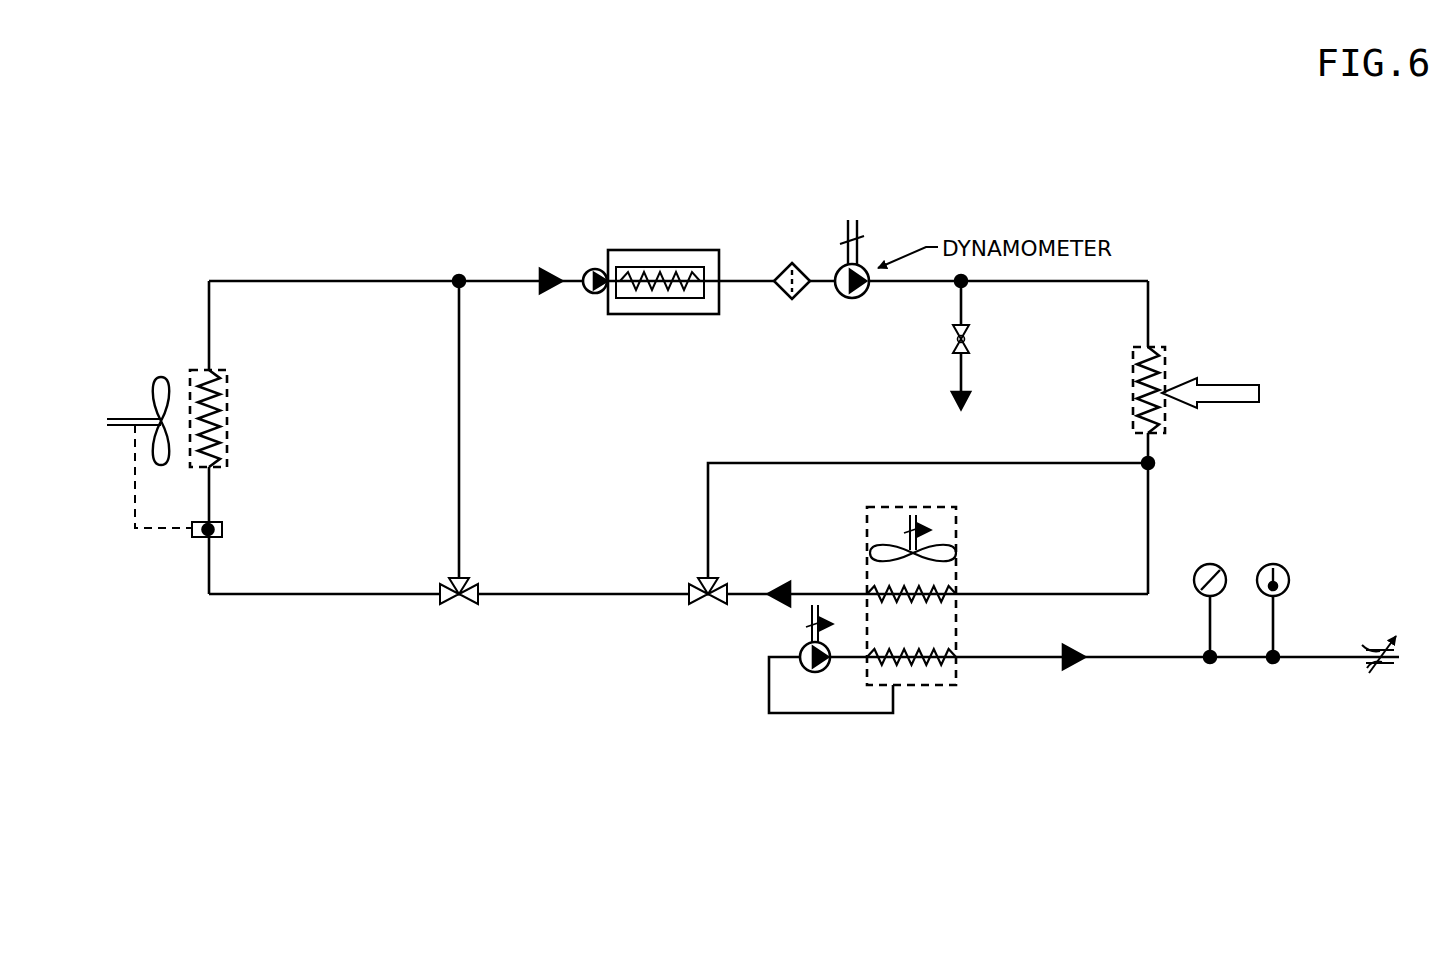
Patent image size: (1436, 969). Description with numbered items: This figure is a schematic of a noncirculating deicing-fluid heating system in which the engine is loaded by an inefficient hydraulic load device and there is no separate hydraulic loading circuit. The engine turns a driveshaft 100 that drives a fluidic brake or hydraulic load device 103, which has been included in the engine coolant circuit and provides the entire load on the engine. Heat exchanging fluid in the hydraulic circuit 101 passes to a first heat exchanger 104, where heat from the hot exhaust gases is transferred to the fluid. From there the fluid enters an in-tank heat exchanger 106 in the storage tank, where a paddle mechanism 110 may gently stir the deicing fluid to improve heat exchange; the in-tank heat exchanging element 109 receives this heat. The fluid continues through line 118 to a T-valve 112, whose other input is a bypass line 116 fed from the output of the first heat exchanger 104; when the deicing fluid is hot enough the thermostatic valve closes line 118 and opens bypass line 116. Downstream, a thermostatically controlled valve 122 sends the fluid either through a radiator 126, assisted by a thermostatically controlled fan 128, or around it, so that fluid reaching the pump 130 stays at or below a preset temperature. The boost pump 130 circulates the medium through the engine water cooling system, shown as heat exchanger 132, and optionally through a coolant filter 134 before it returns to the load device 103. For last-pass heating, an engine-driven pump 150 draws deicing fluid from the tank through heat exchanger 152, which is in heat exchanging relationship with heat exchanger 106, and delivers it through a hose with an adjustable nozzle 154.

The driveshaft 100 is at (875, 236).
The hydraulic circuit 101 is at (349, 262).
The hydraulic load device 103 is at (852, 306).
The first heat exchanger 104 is at (1160, 347).
The in-tank heat exchanger 106 is at (953, 582).
The heat exchanging element 109 is at (926, 700).
The paddle mechanism 110 is at (868, 553).
The T-valve 112 is at (698, 577).
The bypass line 116 is at (820, 442).
The line 118 is at (752, 584).
The thermostatically controlled valve 122 is at (478, 575).
The radiator 126 is at (237, 359).
The thermostatically controlled fan 128 is at (136, 410).
The pump 130 is at (585, 264).
The heat exchanger 132 is at (644, 290).
The coolant filter 134 is at (776, 312).
The pump 150 is at (805, 648).
The heat exchanger 152 is at (960, 667).
The adjustable nozzle 154 is at (1365, 682).